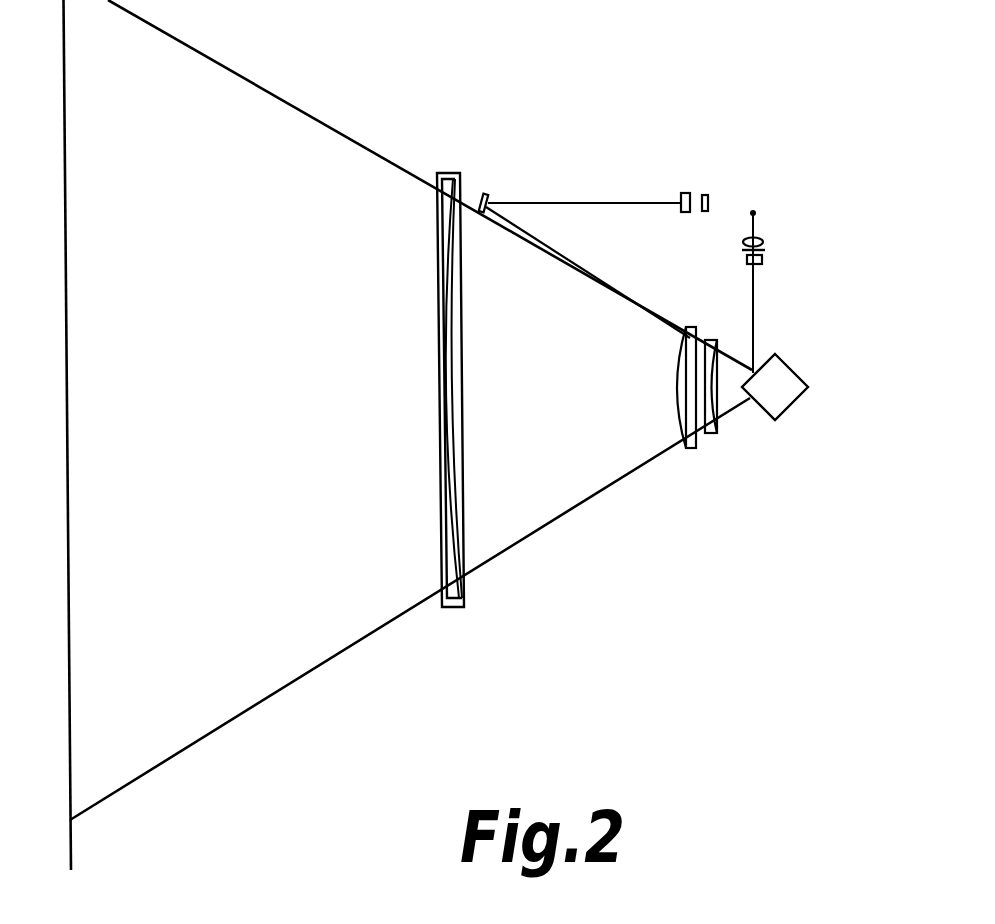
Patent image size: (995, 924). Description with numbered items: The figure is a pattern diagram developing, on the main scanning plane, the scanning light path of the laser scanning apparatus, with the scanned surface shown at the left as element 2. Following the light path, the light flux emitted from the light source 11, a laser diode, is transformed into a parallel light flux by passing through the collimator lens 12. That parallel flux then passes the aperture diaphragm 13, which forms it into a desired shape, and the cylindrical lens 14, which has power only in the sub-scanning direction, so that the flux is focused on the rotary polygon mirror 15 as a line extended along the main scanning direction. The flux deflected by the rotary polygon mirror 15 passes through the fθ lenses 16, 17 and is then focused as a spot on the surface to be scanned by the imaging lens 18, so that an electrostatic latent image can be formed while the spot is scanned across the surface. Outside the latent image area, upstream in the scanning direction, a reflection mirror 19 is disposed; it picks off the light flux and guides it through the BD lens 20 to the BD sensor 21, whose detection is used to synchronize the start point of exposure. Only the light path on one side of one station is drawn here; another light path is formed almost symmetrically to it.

The screen 2 is at (63, 138).
The light source 11 is at (753, 209).
The collimator lens 12 is at (760, 237).
The aperture diaphragm 13 is at (764, 250).
The cylindrical lens 14 is at (762, 262).
The rotary polygon mirror 15 is at (792, 407).
The fθ lens 16 is at (715, 435).
The fθ lens 17 is at (684, 449).
The imaging lens 18 is at (468, 598).
The reflection mirror 19 is at (487, 193).
The BD lens 20 is at (683, 193).
The BD sensor 21 is at (708, 194).